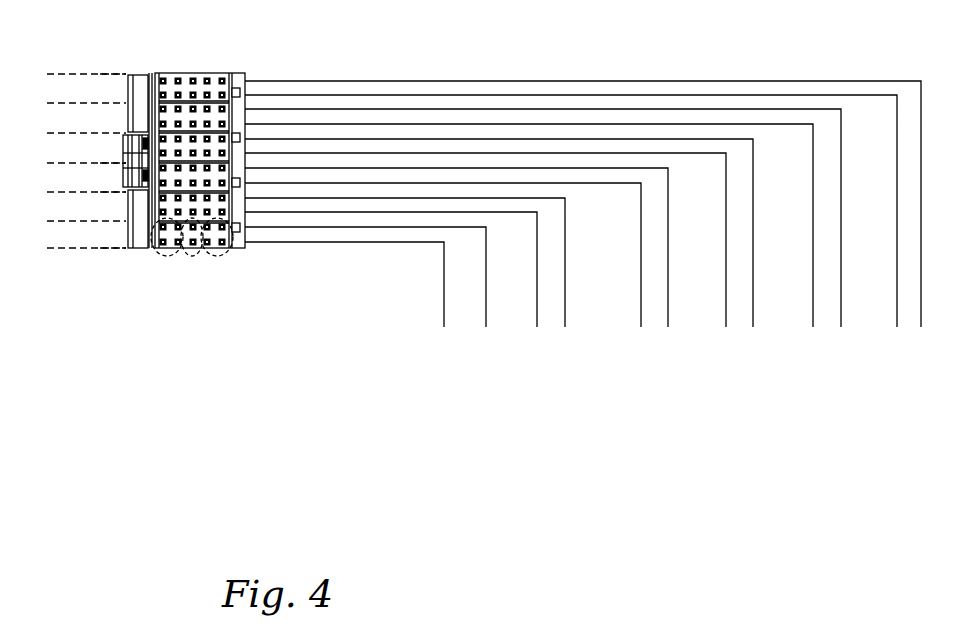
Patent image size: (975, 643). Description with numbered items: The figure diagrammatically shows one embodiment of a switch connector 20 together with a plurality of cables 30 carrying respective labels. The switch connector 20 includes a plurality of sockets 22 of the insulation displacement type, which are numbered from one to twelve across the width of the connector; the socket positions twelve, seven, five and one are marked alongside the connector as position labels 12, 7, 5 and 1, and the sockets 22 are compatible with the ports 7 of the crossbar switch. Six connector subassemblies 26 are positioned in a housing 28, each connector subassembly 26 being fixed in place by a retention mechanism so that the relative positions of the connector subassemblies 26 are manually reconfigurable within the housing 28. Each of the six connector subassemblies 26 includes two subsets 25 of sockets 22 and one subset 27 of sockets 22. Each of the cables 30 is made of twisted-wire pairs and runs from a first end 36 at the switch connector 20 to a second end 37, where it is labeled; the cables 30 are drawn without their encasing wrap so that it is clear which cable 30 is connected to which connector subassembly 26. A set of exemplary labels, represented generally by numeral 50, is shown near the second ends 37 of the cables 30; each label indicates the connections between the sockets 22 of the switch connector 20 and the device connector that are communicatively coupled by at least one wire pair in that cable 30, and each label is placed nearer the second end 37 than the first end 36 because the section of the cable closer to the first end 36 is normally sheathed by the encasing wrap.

The switch connector 20 is at (470, 220).
The sockets 22 is at (230, 67).
The subset of sockets 25 is at (160, 255).
The connector subassemblies 26 is at (47, 133).
The subset of sockets 27 is at (193, 256).
The housing 28 is at (153, 73).
The cables 30 is at (388, 263).
The first end 36 is at (255, 252).
The second end 37 is at (431, 322).
The labels 50 is at (431, 585).
The pin position 12 is at (112, 83).
The ports 7 is at (113, 152).
The pin position 5 is at (113, 181).
The pin position 1 is at (113, 239).